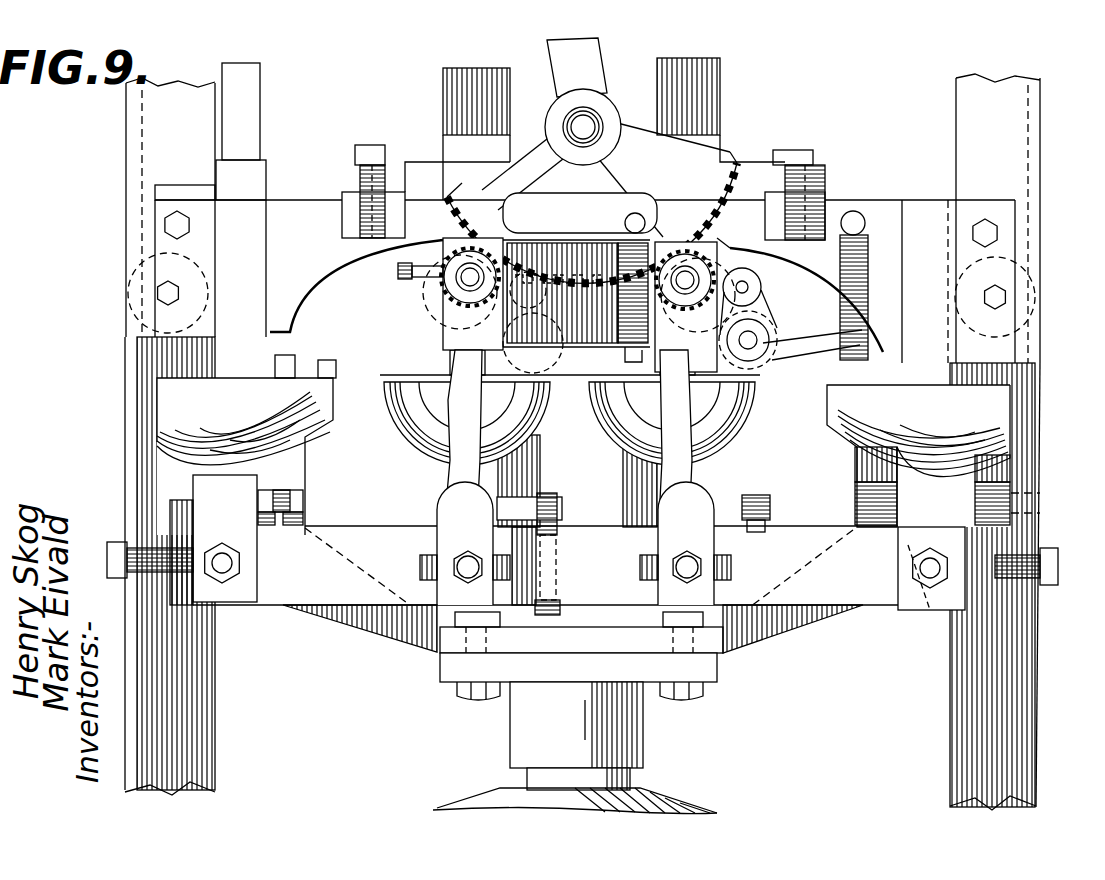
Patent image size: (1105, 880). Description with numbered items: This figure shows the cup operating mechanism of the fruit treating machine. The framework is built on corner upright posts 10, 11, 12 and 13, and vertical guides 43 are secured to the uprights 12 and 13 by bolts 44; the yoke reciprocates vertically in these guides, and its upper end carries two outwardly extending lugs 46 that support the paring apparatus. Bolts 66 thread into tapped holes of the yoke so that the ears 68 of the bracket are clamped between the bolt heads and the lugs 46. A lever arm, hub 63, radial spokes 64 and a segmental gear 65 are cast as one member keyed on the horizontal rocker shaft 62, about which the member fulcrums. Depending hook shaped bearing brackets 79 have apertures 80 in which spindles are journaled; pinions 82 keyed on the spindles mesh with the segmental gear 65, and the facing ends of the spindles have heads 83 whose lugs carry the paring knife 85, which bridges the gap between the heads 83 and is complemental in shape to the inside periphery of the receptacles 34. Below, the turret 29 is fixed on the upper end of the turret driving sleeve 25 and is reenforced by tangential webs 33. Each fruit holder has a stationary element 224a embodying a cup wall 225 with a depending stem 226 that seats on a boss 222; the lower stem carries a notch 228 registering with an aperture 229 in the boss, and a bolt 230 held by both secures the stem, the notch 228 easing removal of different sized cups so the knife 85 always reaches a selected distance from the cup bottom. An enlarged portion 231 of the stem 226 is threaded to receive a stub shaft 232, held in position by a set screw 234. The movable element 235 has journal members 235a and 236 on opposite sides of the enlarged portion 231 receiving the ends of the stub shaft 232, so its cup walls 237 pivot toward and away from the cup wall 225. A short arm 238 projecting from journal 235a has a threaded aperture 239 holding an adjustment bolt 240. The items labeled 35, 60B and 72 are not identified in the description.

The corner upright post 10 is at (200, 710).
The corner upright post 11 is at (965, 730).
The corner upright post 12 is at (142, 107).
The corner upright post 13 is at (1030, 115).
The turret driving sleeve 25 is at (628, 780).
The turret 29 is at (423, 664).
The tangential webs 33 is at (822, 608).
The receptacles 34 is at (396, 452).
The adjusting bolt 35 is at (314, 507).
The vertical guides 43 is at (165, 205).
The bolts 44 is at (175, 226).
The lugs 46 is at (357, 225).
The operating arm 60B is at (586, 47).
The horizontal rocker shaft 62 is at (597, 142).
The hub 63 is at (596, 153).
The radial spokes 64 is at (576, 245).
The segmental gear 65 is at (727, 165).
The bolts 66 is at (372, 145).
The ears 68 is at (352, 175).
The hub 72 is at (620, 119).
The hook shaped bearing brackets 79 is at (450, 330).
The apertures 80 is at (468, 279).
The pinions 82 is at (445, 300).
The heads 83 is at (458, 345).
The paring knife 85 is at (405, 270).
The boss 222 is at (440, 543).
The stationary element 224a is at (387, 450).
The cup wall 225 is at (395, 390).
The stem 226 is at (428, 505).
The notch 228 is at (228, 605).
The aperture 229 is at (420, 612).
The bolt 230 is at (438, 567).
The enlarged portion 231 is at (200, 495).
The stub shaft 232 is at (485, 490).
The set screw 234 is at (942, 505).
The movable element 235 is at (186, 405).
The journal member 235a is at (300, 468).
The journal member 236 is at (160, 535).
The cup walls 237 is at (280, 385).
The short arm 238 is at (560, 508).
The threaded aperture 239 is at (560, 535).
The adjustment bolt 240 is at (552, 497).